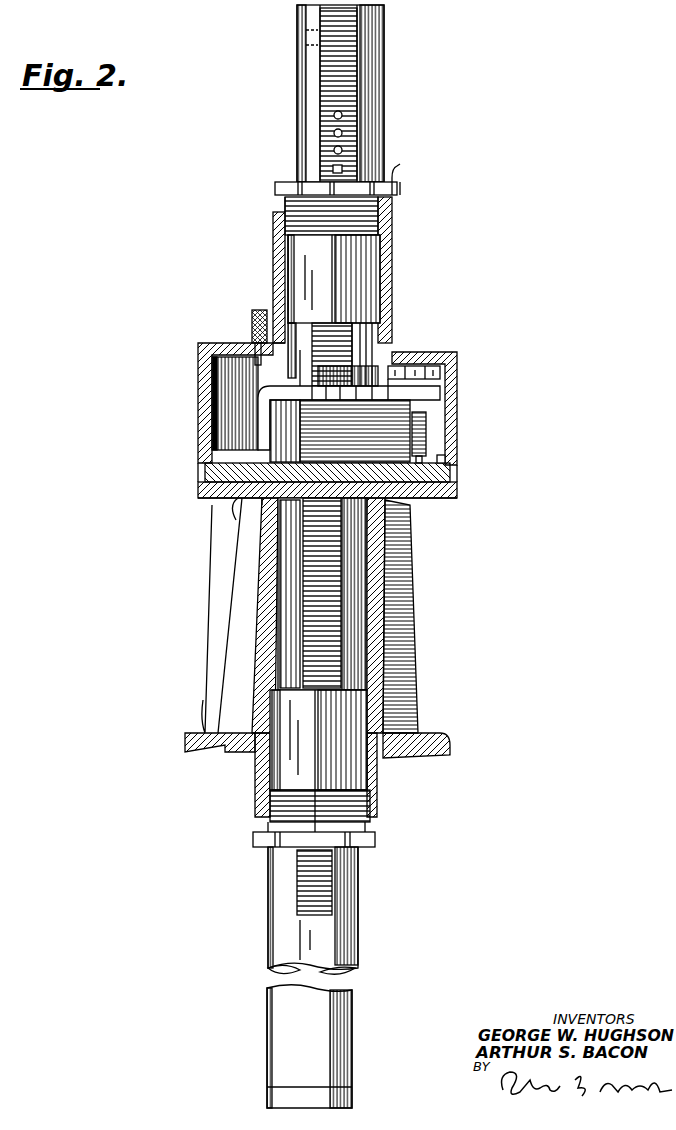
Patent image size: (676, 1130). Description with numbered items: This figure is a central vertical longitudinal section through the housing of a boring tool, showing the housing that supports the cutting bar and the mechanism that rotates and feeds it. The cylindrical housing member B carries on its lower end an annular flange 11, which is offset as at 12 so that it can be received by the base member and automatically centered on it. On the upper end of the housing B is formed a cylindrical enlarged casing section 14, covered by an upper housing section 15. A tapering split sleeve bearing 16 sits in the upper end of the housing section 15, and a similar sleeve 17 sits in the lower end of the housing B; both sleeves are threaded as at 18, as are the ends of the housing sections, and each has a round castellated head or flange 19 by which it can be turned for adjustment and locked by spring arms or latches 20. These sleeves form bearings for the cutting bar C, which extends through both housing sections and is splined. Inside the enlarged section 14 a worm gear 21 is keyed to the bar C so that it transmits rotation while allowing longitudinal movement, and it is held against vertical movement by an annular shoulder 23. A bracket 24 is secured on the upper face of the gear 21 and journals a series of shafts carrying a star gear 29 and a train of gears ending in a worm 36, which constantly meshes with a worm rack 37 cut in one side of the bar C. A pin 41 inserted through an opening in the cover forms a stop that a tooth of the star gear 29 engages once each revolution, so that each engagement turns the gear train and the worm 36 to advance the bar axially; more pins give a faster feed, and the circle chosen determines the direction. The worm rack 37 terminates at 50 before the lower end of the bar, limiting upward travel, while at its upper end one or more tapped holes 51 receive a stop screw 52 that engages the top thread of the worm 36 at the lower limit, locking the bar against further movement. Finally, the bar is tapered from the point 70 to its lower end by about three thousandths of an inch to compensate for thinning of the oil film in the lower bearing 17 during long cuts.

The cutting bar C is at (385, 80).
The tapped holes 51 is at (335, 150).
The stop screw 52 is at (352, 168).
The round shaped heads or flanges 19 is at (280, 190).
The spring arms or latches 20 is at (398, 195).
The threads 18 is at (287, 222).
The upper housing section 15 is at (274, 268).
The tapering split sleeve bearing 16 is at (380, 290).
The pin 41 is at (257, 343).
The cylindrical enlarged casing section 14 is at (198, 388).
The star gear 29 is at (432, 372).
The bracket 24 is at (412, 400).
The annular shoulder 23 is at (443, 464).
The worm gear 21 is at (215, 498).
The worm 36 is at (395, 502).
The worm rack 37 is at (340, 583).
The cylindrical housing member B is at (260, 595).
The annular flange 11 is at (203, 730).
The offset 12 is at (240, 758).
The sleeve 17 is at (378, 783).
The taper starting point 70 is at (362, 880).
The termination of worm rack 50 is at (300, 912).